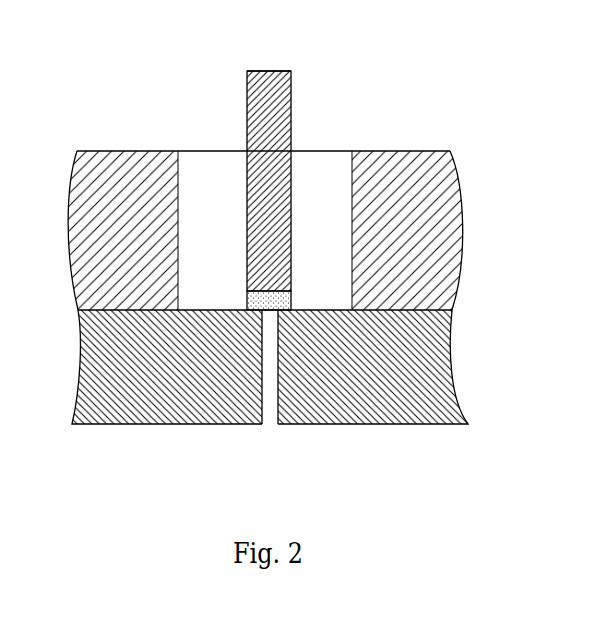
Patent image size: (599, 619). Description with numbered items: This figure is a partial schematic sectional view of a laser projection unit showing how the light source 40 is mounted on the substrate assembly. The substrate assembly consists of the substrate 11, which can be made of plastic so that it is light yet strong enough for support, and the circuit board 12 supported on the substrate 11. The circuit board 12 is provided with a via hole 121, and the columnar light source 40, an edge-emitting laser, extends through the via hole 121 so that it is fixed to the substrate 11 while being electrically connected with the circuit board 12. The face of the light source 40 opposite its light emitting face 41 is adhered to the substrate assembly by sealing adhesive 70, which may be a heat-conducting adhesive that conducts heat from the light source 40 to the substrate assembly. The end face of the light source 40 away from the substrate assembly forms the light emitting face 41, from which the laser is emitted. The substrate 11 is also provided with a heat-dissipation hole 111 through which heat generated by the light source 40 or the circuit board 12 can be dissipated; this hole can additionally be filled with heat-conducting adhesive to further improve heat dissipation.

The substrate 11 is at (403, 415).
The heat-dissipation hole 111 is at (274, 414).
The circuit board 12 is at (110, 163).
The via hole 121 is at (217, 188).
The light source 40 is at (283, 128).
The light emitting face 41 is at (265, 70).
The sealing adhesive 70 is at (257, 302).